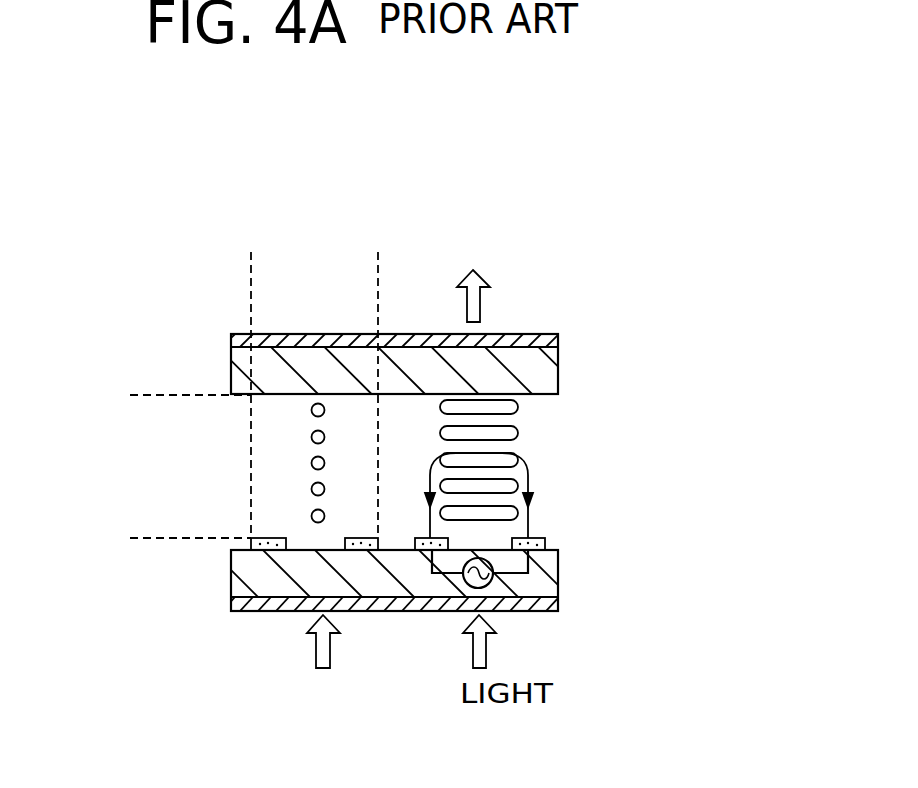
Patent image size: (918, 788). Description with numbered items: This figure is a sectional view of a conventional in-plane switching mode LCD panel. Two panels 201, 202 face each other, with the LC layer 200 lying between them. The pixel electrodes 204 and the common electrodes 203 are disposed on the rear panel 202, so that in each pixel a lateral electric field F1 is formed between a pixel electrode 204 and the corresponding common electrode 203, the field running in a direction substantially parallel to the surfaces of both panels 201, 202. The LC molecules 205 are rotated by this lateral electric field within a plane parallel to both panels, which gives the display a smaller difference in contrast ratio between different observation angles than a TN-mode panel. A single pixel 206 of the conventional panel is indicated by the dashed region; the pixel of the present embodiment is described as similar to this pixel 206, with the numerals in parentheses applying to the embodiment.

The LC layer 200 is at (130, 395).
The front panel 201 is at (540, 374).
The rear panel 202 is at (543, 577).
The common electrode 203 is at (423, 538).
The pixel electrode 204 is at (545, 538).
The LC molecules 205 is at (505, 433).
The pixel 206 is at (378, 242).
The lateral electric field F1 is at (530, 473).